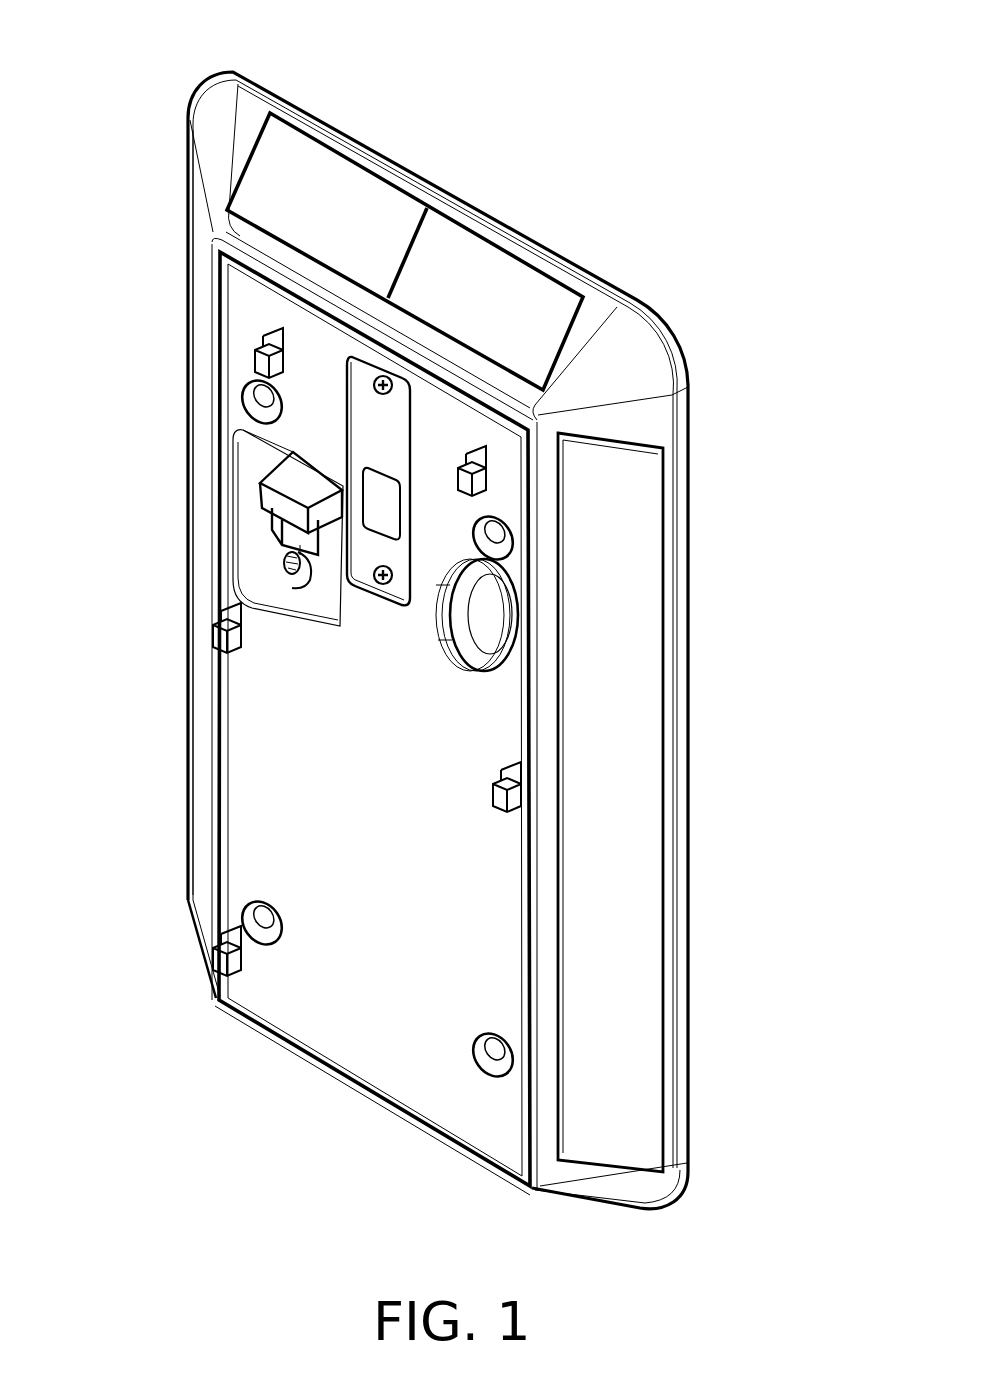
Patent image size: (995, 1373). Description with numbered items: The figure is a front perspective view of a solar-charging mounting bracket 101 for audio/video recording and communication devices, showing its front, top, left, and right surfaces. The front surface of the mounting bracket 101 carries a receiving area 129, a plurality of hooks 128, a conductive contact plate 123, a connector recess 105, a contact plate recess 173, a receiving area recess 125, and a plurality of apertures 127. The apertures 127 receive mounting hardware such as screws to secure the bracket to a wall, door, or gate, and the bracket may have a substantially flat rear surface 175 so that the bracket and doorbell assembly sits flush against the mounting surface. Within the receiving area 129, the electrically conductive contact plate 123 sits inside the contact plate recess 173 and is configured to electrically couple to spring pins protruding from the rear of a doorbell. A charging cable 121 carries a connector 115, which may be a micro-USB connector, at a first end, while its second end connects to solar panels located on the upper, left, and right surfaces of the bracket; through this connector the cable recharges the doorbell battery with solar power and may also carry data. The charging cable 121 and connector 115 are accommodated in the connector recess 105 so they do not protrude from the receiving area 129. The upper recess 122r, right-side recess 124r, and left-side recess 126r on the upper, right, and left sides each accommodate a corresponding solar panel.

The solar-charging mounting bracket 101 is at (105, 48).
The rear surface 175 is at (668, 302).
The upper recess 122r is at (460, 252).
The right-side recess 124r is at (620, 575).
The left-side recess 126r is at (201, 785).
The contact plate recess 173 is at (377, 410).
The conductive contact plate 123 is at (363, 535).
The apertures 127 is at (262, 392).
The connector recess 105 is at (260, 445).
The connector 115 is at (300, 495).
The charging cable 121 is at (290, 565).
The receiving area recess 125 is at (493, 612).
The hooks 128 is at (512, 805).
The receiving area 129 is at (312, 1020).